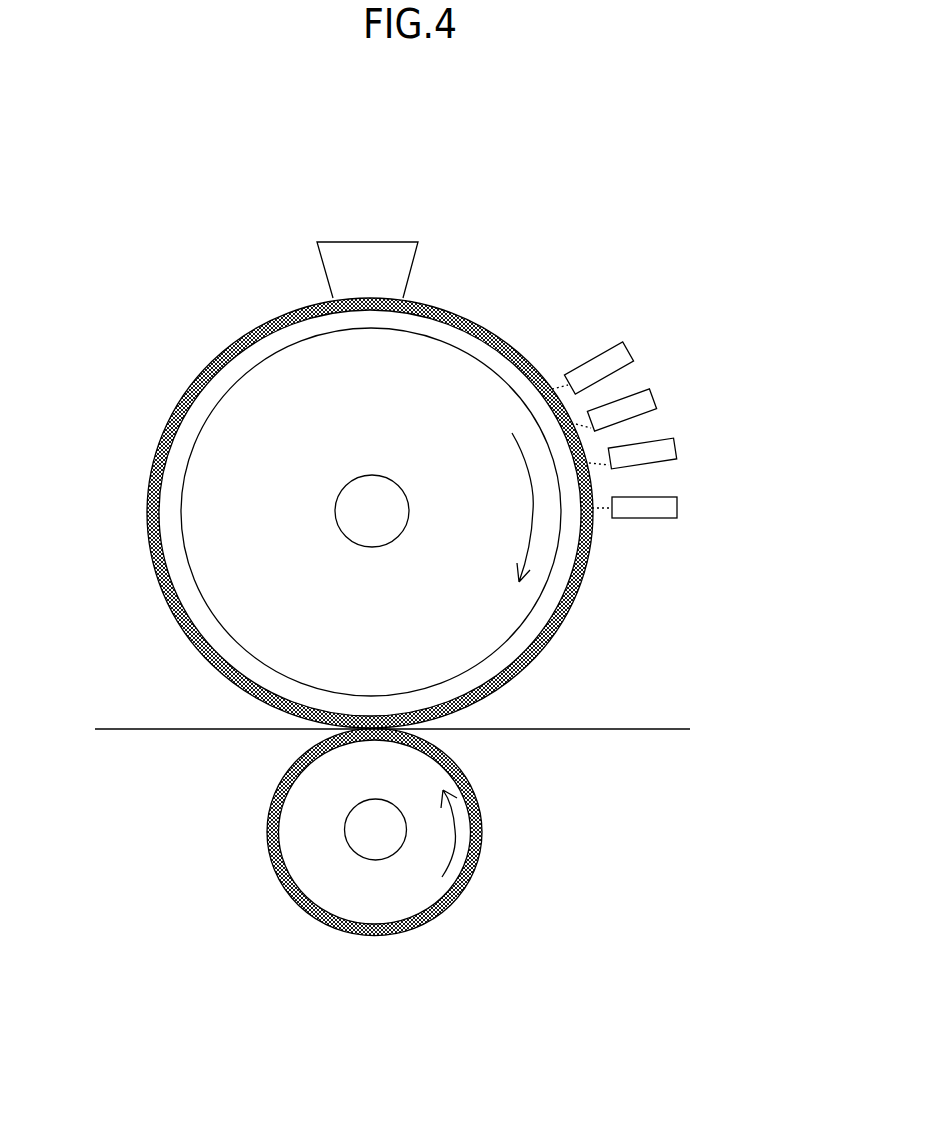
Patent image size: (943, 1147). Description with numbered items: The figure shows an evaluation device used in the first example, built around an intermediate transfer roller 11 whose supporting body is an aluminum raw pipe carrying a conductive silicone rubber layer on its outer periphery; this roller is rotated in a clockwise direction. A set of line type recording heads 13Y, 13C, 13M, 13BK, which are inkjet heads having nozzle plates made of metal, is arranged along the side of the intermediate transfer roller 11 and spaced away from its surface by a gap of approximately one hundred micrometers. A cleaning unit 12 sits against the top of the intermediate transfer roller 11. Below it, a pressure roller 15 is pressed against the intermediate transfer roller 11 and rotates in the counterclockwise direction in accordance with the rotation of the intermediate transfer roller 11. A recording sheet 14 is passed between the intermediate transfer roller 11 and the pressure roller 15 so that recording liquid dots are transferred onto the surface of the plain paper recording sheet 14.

The intermediate transfer roller 11 is at (193, 433).
The cleaning unit 12 is at (373, 257).
The line type recording head 13Y is at (620, 357).
The line type recording head 13C is at (645, 402).
The line type recording head 13M is at (667, 455).
The line type recording head 13BK is at (668, 513).
The recording sheet 14 is at (117, 730).
The pressure roller 15 is at (290, 858).